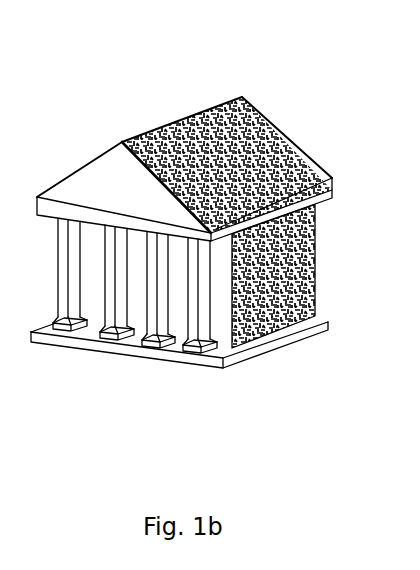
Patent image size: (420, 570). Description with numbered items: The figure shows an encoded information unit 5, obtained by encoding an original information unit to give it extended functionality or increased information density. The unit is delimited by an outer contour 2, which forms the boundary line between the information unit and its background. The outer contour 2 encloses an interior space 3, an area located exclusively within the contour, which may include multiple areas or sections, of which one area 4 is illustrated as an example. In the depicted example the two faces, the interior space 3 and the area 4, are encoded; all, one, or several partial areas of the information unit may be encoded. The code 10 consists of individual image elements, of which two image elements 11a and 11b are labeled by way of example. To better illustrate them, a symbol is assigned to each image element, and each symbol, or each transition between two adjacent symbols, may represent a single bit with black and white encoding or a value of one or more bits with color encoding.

The outer contour 2 is at (54, 346).
The interior space 3 is at (274, 120).
The area 4 is at (316, 252).
The encoded information unit 5 is at (107, 395).
The code 10 is at (206, 112).
The image element 11a is at (124, 138).
The image element 11b is at (143, 134).